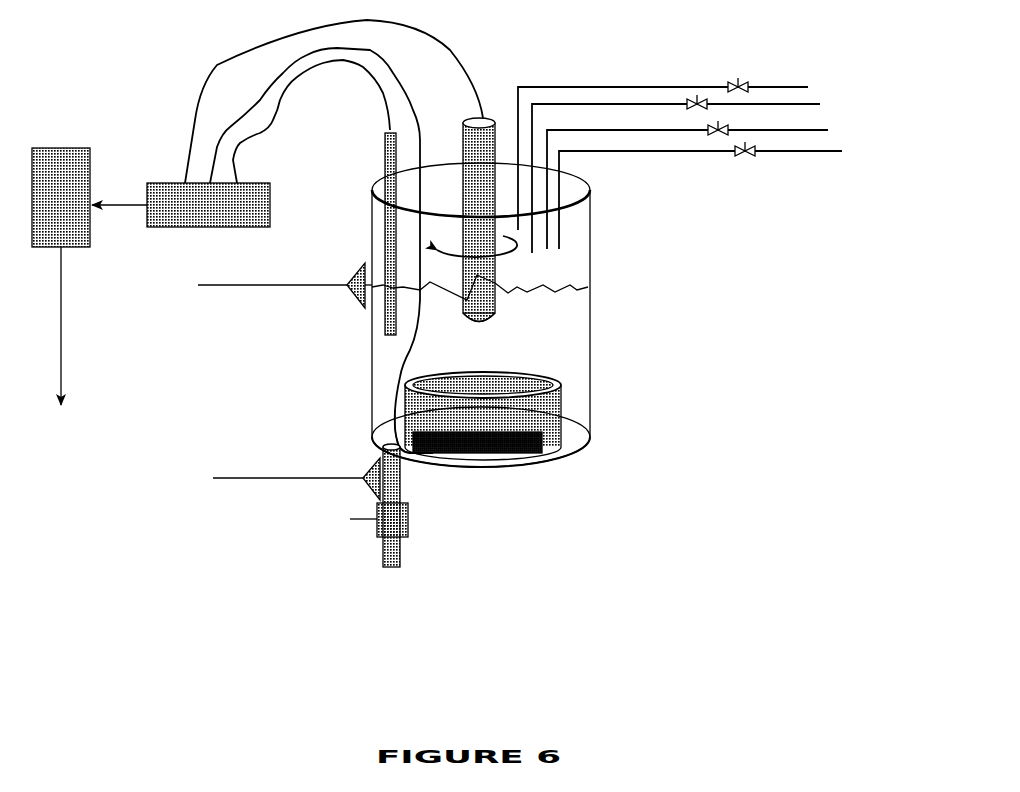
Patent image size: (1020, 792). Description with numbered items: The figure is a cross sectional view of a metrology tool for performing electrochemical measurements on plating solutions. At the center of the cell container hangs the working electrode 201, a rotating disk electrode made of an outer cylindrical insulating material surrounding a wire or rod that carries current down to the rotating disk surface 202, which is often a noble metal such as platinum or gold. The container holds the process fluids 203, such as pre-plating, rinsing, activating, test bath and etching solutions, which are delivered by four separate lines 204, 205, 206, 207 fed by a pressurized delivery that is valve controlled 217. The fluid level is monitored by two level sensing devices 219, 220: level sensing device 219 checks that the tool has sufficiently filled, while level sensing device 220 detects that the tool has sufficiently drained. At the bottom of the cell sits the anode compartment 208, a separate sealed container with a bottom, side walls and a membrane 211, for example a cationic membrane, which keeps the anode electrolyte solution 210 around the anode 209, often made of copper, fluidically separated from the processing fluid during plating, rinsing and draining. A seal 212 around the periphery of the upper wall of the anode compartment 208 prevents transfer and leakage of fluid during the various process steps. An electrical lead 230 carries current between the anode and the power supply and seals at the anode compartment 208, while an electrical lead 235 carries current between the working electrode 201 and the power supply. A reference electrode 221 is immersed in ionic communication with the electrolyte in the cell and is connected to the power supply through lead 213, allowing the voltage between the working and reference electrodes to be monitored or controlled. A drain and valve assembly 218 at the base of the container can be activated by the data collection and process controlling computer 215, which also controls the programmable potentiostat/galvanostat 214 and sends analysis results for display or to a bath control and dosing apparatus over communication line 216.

The working electrode 201 is at (502, 278).
The rotating disk surface 202 is at (473, 323).
The process fluids 203 is at (533, 335).
The line 204 is at (726, 197).
The line 205 is at (719, 181).
The line 206 is at (707, 172).
The line 207 is at (692, 151).
The anode compartment 208 is at (398, 413).
The anode 209 is at (537, 443).
The anode electrolyte solution 210 is at (532, 415).
The membrane 211 is at (542, 377).
The seal 212 is at (507, 387).
The lead 213 is at (311, 121).
The programmable potentiostat/galvanostat 214 is at (208, 205).
The data collection and process controlling computer 215 is at (89, 197).
The communication line 216 is at (61, 344).
The valve controlled delivery 217 is at (730, 130).
The drain and valve assembly 218 is at (410, 520).
The level sensing device 219 is at (285, 285).
The level sensing device 220 is at (296, 478).
The reference electrode 221 is at (372, 234).
The electrical lead 230 is at (321, 250).
The electrical lead 235 is at (328, 101).